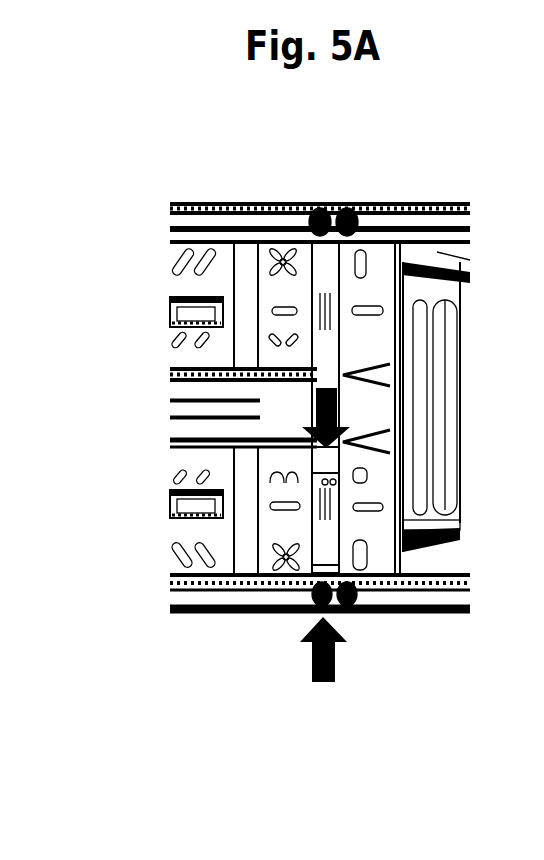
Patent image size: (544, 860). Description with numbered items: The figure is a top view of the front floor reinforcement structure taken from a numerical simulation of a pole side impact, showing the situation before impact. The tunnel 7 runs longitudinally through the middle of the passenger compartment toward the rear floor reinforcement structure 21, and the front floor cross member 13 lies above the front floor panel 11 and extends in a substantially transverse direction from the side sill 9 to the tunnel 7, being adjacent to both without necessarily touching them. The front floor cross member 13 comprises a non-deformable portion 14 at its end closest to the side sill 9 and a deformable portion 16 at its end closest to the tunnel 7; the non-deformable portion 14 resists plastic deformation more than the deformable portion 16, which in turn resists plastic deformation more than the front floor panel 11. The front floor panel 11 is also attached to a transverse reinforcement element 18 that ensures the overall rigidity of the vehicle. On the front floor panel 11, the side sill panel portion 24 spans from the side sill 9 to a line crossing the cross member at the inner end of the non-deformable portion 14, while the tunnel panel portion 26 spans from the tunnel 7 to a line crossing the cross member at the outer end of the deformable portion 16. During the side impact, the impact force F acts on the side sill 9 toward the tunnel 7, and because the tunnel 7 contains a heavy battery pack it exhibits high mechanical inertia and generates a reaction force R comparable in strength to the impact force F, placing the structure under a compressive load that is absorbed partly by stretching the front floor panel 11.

The tunnel 7 is at (210, 395).
The side sill 9 is at (257, 620).
The front floor panel 11 is at (370, 525).
The front floor cross member 13 is at (345, 505).
The non-deformable portion 14 is at (327, 541).
The deformable portion 16 is at (333, 482).
The reinforcement element 18 is at (242, 531).
The rear floor reinforcement structure 21 is at (430, 252).
The side sill panel portion 24 is at (268, 557).
The tunnel panel portion 26 is at (278, 461).
The reaction force R is at (324, 390).
The impact force F is at (335, 672).